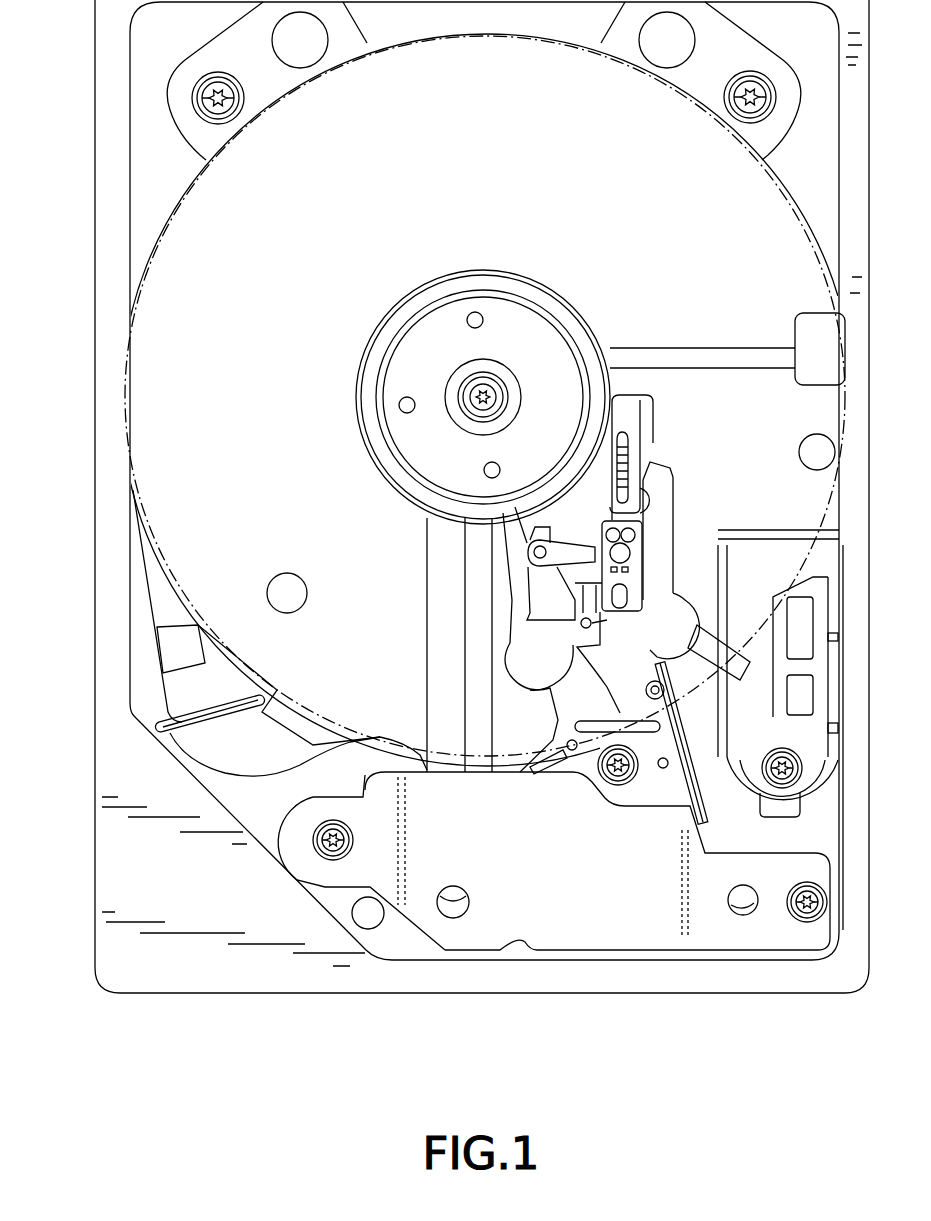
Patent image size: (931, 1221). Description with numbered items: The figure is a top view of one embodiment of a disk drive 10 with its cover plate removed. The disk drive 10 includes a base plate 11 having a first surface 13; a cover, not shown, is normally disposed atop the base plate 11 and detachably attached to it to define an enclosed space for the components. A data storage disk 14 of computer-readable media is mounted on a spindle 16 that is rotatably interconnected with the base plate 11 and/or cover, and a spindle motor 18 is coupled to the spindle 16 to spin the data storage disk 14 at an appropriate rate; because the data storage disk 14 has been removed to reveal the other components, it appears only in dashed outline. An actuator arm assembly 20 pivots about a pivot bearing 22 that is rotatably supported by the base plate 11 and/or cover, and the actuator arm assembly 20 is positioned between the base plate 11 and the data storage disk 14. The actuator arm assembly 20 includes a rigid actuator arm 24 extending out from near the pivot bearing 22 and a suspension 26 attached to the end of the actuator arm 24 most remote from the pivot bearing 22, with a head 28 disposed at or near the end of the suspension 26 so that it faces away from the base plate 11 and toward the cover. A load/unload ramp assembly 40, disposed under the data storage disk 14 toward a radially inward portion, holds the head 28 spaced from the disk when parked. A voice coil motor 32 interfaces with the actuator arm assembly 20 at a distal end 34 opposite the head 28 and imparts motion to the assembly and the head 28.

The disk drive 10 is at (412, 998).
The base plate 11 is at (200, 978).
The first surface 13 is at (667, 582).
The data storage disk 14 is at (148, 537).
The spindle 16 is at (540, 332).
The spindle motor 18 is at (465, 372).
The actuator arm assembly 20 is at (605, 620).
The pivot bearing 22 is at (622, 778).
The actuator arm 24 is at (632, 580).
The suspension 26 is at (657, 487).
The head 28 is at (622, 432).
The voice coil motor 32 is at (516, 900).
The distal end 34 is at (693, 823).
The load/unload ramp assembly 40 is at (660, 487).